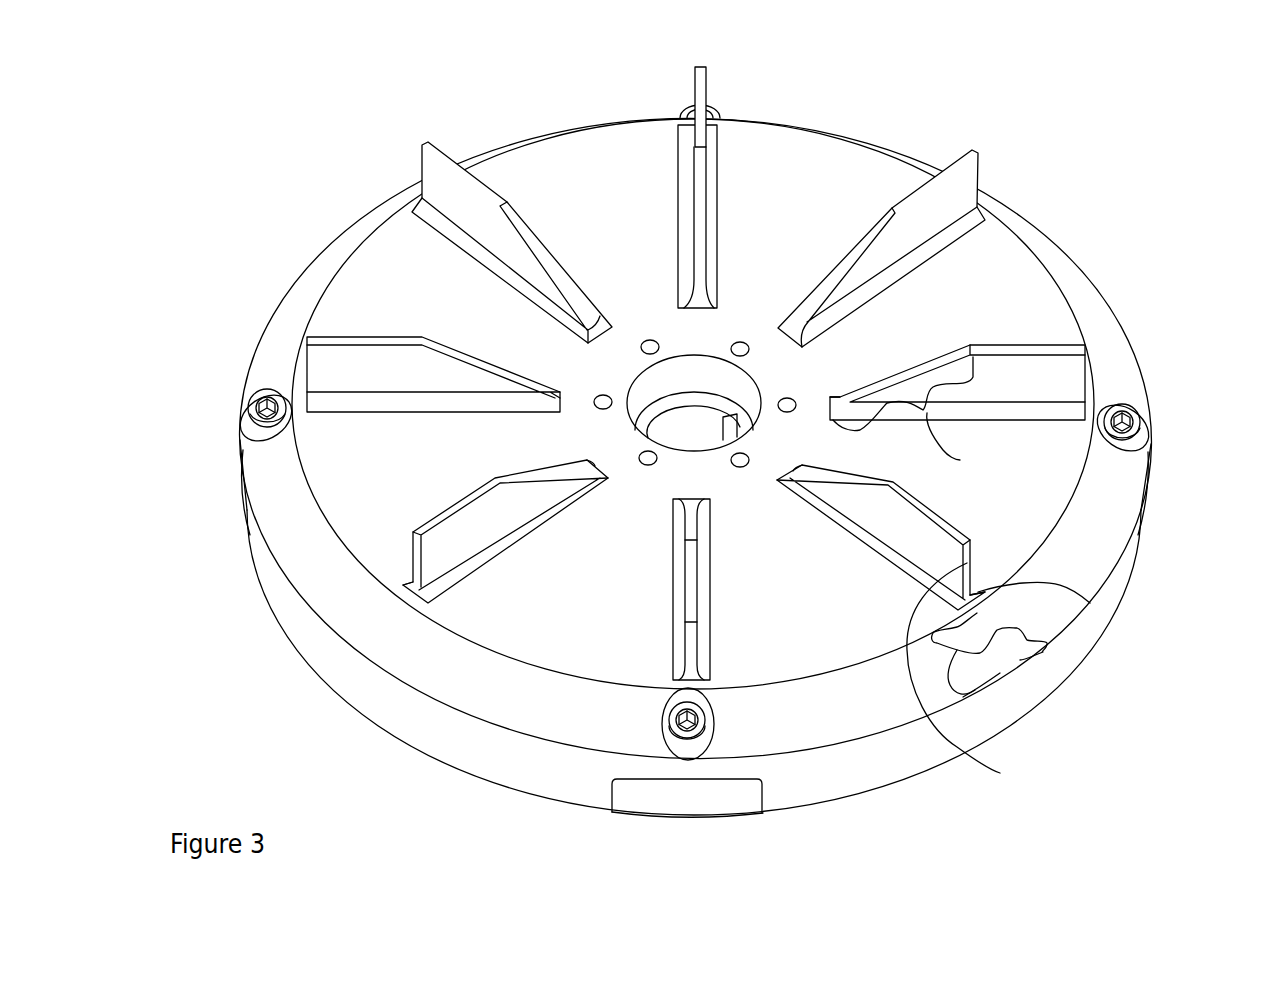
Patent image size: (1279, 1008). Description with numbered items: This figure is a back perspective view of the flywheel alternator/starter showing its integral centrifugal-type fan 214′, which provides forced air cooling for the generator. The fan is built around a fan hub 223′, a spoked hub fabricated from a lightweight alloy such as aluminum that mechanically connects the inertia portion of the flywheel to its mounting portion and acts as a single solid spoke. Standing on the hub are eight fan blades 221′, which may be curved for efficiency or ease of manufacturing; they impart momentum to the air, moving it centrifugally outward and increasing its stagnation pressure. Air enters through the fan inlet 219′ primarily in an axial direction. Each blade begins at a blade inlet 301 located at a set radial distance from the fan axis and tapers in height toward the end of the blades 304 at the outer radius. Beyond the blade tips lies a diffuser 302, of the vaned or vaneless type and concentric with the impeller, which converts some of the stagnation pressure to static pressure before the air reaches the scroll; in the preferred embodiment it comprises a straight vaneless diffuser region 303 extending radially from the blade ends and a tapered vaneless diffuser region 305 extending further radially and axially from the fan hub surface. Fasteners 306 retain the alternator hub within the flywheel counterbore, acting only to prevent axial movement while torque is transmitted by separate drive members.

The centrifugal-type fan 214′ is at (503, 122).
The fan blades 221′ is at (422, 170).
The fan hub 223′ is at (378, 291).
The fan inlet 219′ is at (627, 475).
The blade inlet 301 is at (950, 455).
The straight vaneless diffuser region 303 is at (1085, 595).
The tapered vaneless diffuser region 305 is at (990, 667).
The diffuser 302 is at (975, 700).
The end of the blades 304 is at (958, 747).
The fasteners 306 is at (688, 742).